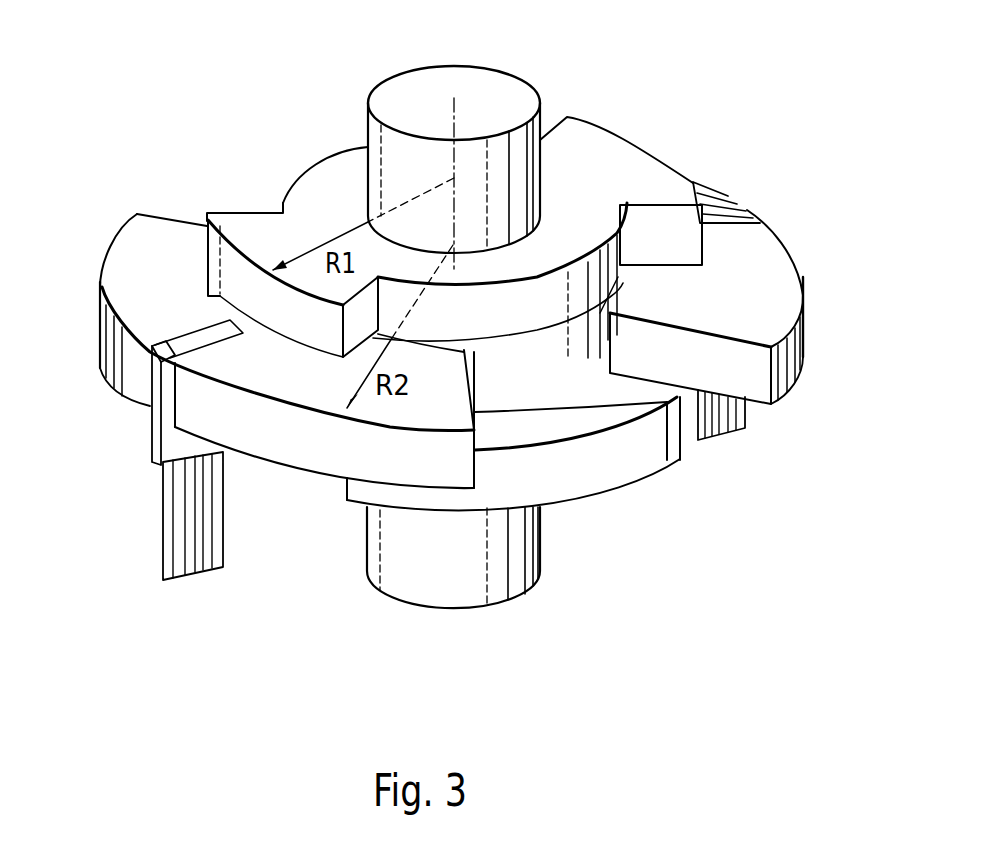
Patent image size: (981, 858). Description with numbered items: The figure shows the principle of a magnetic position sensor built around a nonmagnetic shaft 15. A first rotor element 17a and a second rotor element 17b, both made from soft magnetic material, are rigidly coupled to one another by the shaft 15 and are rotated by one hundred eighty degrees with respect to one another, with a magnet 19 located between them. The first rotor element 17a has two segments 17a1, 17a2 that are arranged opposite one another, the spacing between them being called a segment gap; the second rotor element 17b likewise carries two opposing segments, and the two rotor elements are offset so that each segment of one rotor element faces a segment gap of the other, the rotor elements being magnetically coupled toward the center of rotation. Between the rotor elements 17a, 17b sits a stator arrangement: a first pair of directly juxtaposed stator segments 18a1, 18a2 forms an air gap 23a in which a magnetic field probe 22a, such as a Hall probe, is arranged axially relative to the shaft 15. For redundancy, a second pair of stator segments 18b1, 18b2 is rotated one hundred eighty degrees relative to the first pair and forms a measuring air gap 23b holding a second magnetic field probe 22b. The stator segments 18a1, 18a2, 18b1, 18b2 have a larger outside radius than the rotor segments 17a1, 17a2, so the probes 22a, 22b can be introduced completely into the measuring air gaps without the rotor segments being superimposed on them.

The nonmagnetic shaft 15 is at (451, 594).
The first rotor element 17a is at (327, 172).
The first segment of first rotor element 17a1 is at (247, 227).
The second segment of first rotor element 17a2 is at (592, 135).
The second rotor element 17b is at (657, 458).
The first stator segment 18a1 is at (128, 371).
The second stator segment 18a2 is at (293, 455).
The third stator segment 18b1 is at (703, 187).
The fourth stator segment 18b2 is at (752, 387).
The magnet 19 is at (547, 388).
The magnetic field probe 22a is at (157, 443).
The second magnetic field probe 22b is at (740, 203).
The air gap 23a is at (233, 332).
The measuring air gap 23b is at (750, 213).